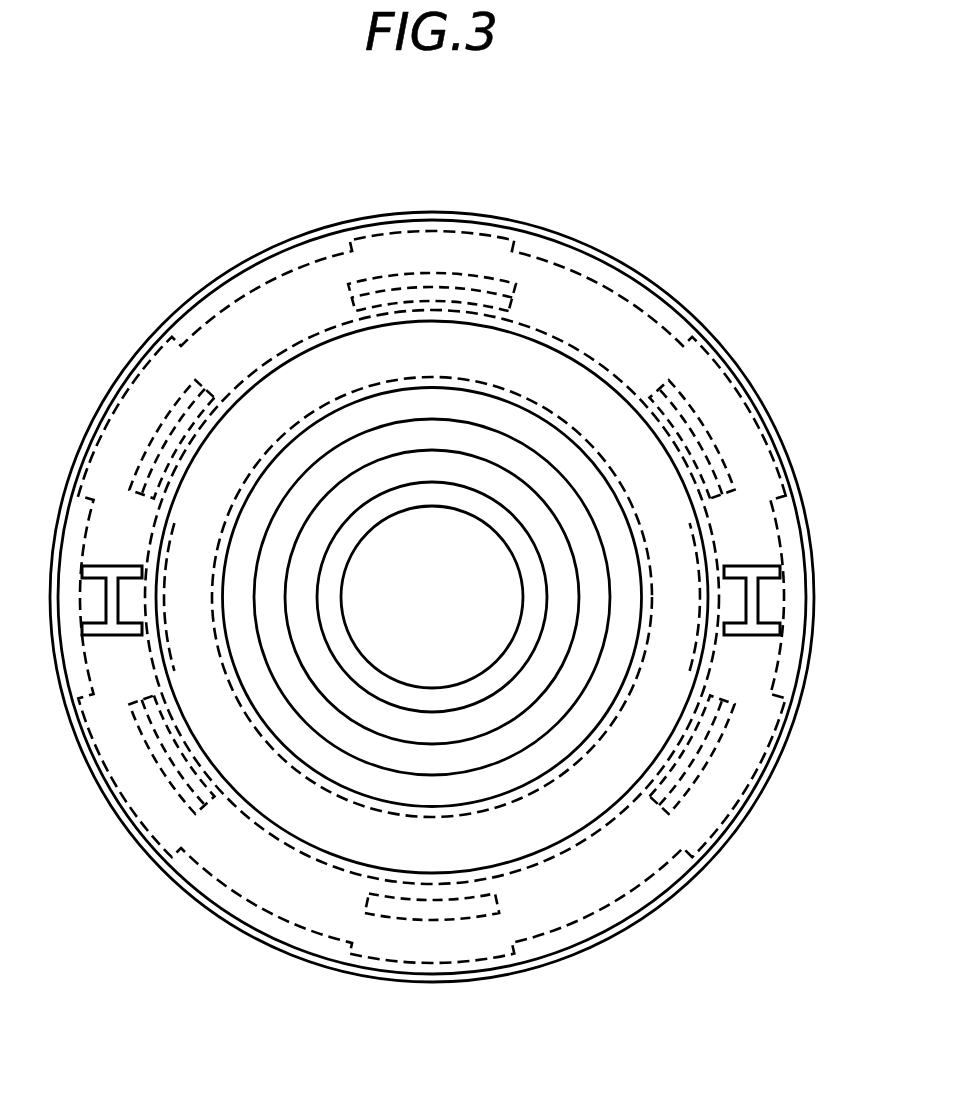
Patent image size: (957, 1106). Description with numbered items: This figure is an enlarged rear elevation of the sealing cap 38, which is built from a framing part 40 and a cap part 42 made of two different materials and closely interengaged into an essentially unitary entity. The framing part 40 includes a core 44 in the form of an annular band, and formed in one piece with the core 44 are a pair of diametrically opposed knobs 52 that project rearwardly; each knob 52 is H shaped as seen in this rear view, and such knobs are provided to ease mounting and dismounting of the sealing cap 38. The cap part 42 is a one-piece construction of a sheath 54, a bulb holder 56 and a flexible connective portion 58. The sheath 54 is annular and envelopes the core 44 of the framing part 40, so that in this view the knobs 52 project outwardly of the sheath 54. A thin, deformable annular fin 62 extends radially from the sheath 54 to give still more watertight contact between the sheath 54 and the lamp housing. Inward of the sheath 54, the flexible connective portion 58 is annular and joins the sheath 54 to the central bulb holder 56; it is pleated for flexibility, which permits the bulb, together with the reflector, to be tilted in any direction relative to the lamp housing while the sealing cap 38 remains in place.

The sealing cap 38 is at (612, 178).
The framing part 40 is at (267, 280).
The cap part 42 is at (413, 210).
The core 44 is at (730, 832).
The knobs 52 is at (112, 567).
The sheath 54 is at (605, 323).
The bulb holder 56 is at (473, 521).
The flexible connective portion 58 is at (283, 548).
The annular fin 62 is at (729, 363).